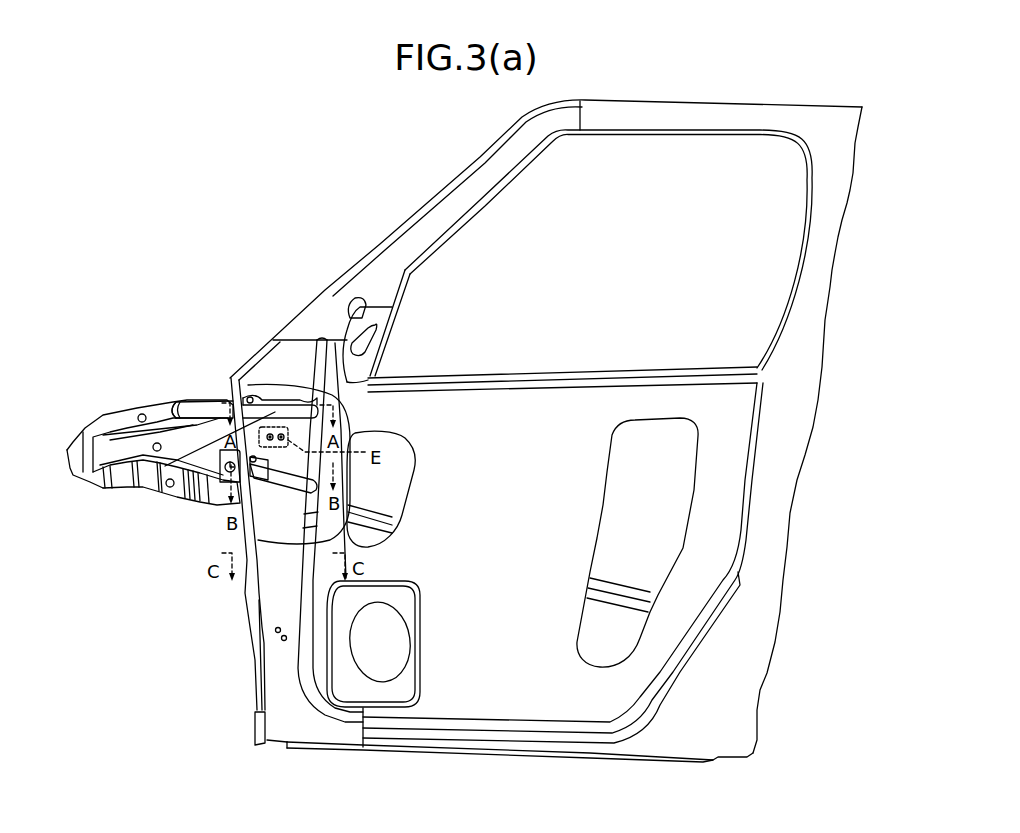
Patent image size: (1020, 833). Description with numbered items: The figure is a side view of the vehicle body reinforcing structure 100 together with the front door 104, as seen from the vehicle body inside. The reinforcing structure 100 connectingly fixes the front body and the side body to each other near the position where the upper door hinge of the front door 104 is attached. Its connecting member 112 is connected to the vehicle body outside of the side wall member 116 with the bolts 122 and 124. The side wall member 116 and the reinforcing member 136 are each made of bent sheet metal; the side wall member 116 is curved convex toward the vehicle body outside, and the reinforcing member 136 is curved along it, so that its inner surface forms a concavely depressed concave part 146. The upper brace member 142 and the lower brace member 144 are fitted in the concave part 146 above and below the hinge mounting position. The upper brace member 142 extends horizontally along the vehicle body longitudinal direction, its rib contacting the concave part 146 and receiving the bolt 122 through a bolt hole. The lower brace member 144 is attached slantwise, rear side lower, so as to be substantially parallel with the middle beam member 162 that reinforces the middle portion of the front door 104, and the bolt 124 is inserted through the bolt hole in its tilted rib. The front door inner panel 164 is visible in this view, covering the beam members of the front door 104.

The vehicle body reinforcing structure 100 is at (164, 250).
The front door 104 is at (470, 372).
The connecting member 112 is at (122, 420).
The side wall member 116 is at (317, 317).
The bolt 122 is at (305, 396).
The bolt 124 is at (252, 420).
The reinforcing member 136 is at (282, 342).
The upper brace member 142 is at (170, 486).
The lower brace member 144 is at (335, 548).
The concave part 146 is at (283, 374).
The middle beam member 162 is at (395, 505).
The front door inner panel 164 is at (592, 402).